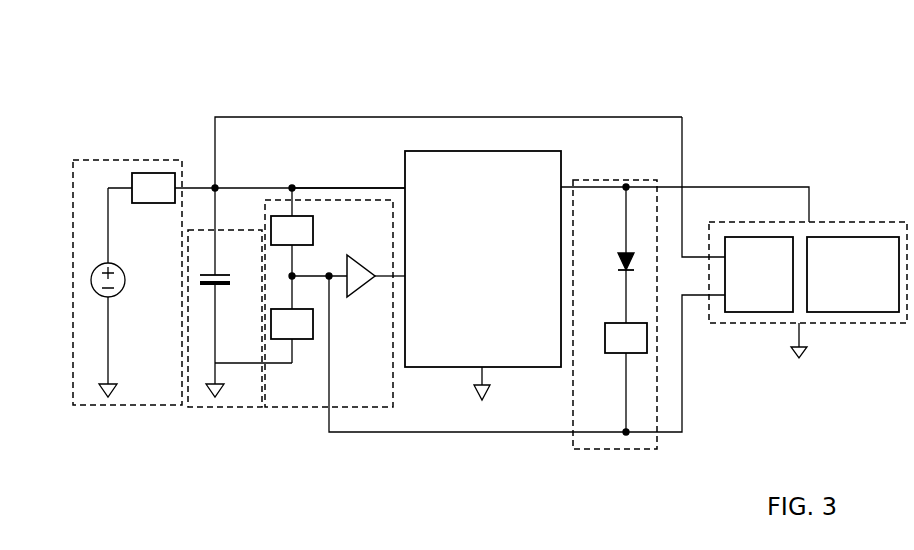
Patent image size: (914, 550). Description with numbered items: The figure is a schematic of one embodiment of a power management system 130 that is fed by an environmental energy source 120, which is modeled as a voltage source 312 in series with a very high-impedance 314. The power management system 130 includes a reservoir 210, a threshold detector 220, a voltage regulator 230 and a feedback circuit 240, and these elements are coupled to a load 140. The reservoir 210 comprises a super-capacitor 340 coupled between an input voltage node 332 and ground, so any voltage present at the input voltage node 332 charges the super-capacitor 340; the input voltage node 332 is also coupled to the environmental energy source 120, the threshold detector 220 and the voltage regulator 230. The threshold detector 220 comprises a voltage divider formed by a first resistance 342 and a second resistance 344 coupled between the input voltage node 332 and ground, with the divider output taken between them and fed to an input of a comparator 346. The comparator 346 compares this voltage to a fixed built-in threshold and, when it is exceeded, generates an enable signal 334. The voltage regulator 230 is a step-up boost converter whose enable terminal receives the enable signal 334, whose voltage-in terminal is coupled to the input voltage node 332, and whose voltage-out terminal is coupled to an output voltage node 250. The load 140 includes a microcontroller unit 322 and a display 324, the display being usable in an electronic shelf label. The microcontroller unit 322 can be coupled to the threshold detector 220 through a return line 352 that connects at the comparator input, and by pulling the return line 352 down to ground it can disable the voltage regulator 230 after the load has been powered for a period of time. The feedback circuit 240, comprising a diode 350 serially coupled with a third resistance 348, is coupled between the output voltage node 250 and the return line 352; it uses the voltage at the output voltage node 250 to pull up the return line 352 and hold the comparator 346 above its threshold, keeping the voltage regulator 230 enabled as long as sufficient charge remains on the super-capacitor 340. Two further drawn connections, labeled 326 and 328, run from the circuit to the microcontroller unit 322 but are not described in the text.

The environmental energy source 120 is at (90, 160).
The voltage source 312 is at (95, 293).
The very high-impedance 314 is at (152, 173).
The power management system 130 is at (337, 113).
The reservoir 210 is at (228, 407).
The super-capacitor 340 is at (225, 291).
The threshold detector 220 is at (316, 407).
The first resistance 342 is at (313, 230).
The second resistance 344 is at (305, 340).
The comparator 346 is at (355, 298).
The enable signal 334 is at (398, 278).
The input voltage node 332 is at (384, 186).
The voltage regulator 230 is at (483, 275).
The output voltage node 250 is at (602, 185).
The feedback circuit 240 is at (615, 450).
The diode 350 is at (620, 256).
The third resistance 348 is at (608, 353).
The return line 352 is at (480, 433).
The MCU return line 328 is at (700, 297).
The MCU signal line 326 is at (703, 256).
The load 140 is at (838, 222).
The microcontroller unit (MCU) 322 is at (759, 274).
The display 324 is at (853, 274).